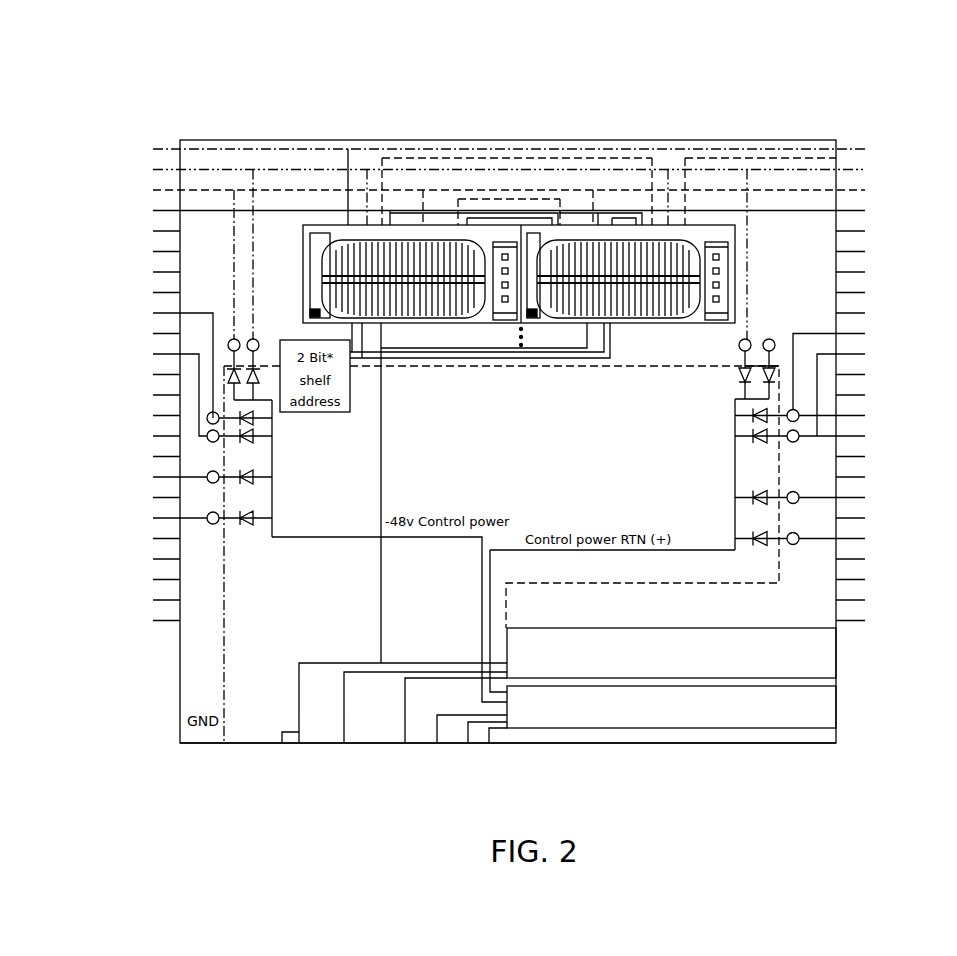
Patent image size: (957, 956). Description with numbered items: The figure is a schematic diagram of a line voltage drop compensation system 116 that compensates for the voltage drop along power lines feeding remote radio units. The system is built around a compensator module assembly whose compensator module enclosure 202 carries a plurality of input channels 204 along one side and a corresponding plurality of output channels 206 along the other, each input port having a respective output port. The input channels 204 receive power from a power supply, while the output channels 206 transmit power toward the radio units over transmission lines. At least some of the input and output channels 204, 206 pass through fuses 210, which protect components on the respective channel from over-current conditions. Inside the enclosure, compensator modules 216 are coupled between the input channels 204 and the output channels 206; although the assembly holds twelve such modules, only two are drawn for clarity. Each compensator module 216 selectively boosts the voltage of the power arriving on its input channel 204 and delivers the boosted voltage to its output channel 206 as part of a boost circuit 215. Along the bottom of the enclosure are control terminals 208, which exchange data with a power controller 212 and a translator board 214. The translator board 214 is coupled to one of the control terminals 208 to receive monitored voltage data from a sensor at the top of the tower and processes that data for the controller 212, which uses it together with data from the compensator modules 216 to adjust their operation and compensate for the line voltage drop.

The line voltage drop compensation system 116 is at (299, 73).
The compensator module enclosure 202 is at (683, 745).
The input channels 204 is at (121, 146).
The output channels 206 is at (849, 138).
The control terminals 208 is at (401, 778).
The fuses 210 is at (218, 443).
The power controller 212 is at (827, 650).
The translator board 214 is at (827, 722).
The boost circuit 215 is at (383, 158).
The compensator modules 216 is at (316, 228).